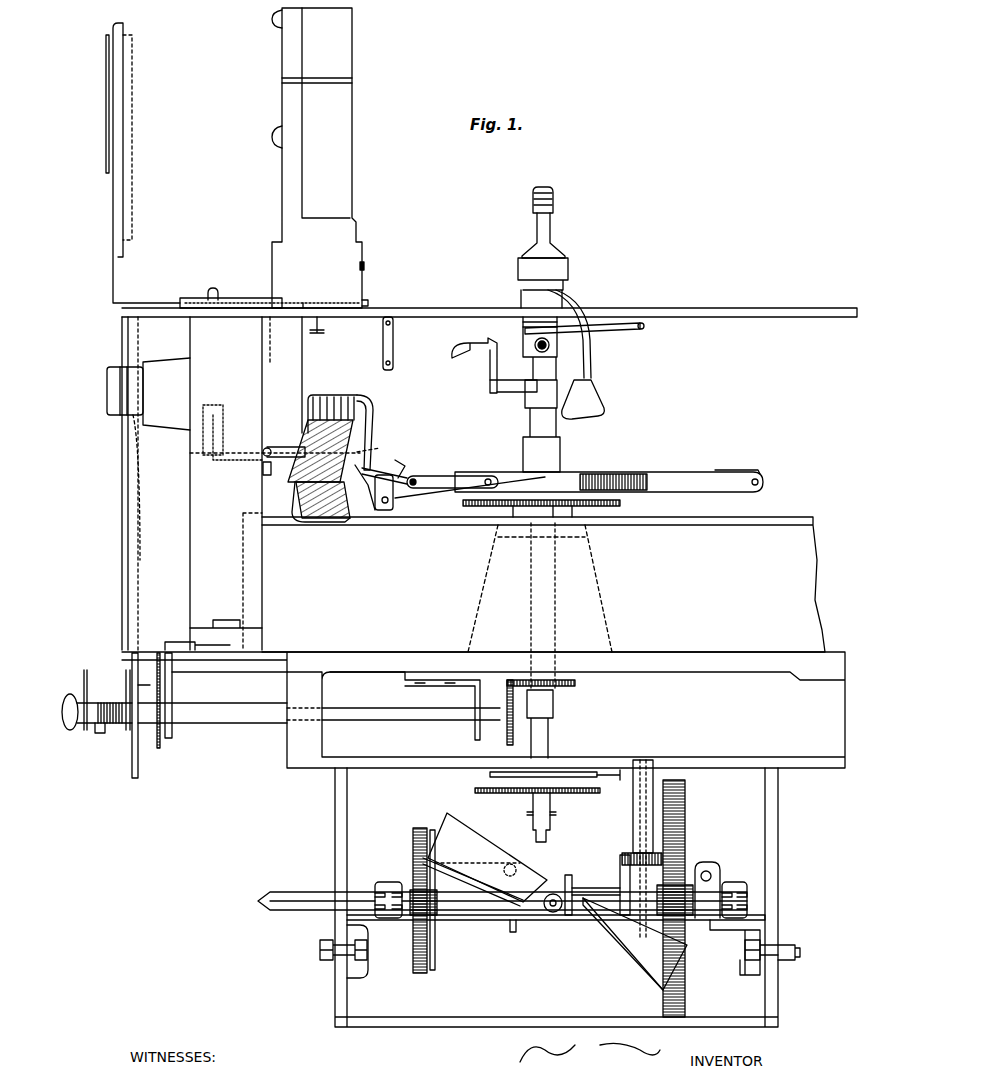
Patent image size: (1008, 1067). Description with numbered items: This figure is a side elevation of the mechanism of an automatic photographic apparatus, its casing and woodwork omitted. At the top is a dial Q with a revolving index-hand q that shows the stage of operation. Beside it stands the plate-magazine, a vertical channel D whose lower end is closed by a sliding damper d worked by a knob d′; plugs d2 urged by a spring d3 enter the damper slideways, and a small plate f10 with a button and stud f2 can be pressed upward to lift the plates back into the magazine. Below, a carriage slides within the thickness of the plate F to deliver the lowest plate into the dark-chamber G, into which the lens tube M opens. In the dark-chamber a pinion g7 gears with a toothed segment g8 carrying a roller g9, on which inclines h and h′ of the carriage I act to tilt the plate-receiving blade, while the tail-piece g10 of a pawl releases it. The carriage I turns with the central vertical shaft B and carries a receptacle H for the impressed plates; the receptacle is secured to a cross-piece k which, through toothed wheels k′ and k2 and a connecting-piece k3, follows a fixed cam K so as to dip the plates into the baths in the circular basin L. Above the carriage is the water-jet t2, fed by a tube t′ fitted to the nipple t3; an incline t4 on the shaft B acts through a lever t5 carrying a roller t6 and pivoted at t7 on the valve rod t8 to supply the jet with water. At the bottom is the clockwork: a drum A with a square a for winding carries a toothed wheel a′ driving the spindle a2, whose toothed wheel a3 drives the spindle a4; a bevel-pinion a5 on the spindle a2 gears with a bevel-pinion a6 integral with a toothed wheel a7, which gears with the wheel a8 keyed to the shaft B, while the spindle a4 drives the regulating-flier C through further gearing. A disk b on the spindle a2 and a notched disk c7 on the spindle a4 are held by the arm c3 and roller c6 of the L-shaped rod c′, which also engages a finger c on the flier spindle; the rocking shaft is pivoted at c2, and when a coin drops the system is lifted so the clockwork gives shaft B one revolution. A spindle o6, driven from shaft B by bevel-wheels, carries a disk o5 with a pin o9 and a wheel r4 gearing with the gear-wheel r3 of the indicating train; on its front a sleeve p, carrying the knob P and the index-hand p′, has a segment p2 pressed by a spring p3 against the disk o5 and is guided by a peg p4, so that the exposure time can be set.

The dial Q is at (113, 218).
The index-hand q is at (106, 131).
The vertical channel or shaft D is at (317, 158).
The sliding damper or shutter d is at (270, 297).
The button or knob d′ is at (221, 291).
The plugs d2 is at (374, 297).
The spring d3 is at (364, 270).
The small plate f10 is at (304, 306).
The button and stud f2 is at (351, 343).
The plate F is at (489, 470).
The hand wheel t3 is at (553, 197).
The central vertical shaft B is at (541, 579).
The lever t4 is at (494, 357).
The collar t8 is at (535, 324).
The pivot t5 is at (535, 348).
The link bar t6 is at (582, 330).
The pivot pin t7 is at (648, 326).
The finger-piece or key t′ is at (571, 334).
The funnel t2 is at (583, 399).
The tube M is at (148, 459).
The dark-chamber or camera proper G is at (233, 483).
The pinion g7 is at (197, 430).
The toothed segment g8 is at (275, 437).
The roller or cylinder g9 is at (283, 469).
The tail-piece of the pawl g10 is at (379, 446).
The receptacle H is at (330, 458).
The incline h is at (396, 468).
The toothed wheel k2 is at (404, 463).
The connecting-piece k3 is at (452, 482).
The toothed wheel k′ is at (386, 512).
The cross-piece k is at (366, 512).
The carriage I is at (579, 489).
The incline h′ is at (737, 463).
The fixed cam K is at (547, 510).
The circular basin L is at (543, 584).
The roller or drum A is at (483, 839).
The gear-wheel r3 is at (142, 714).
The wheel r4 is at (222, 704).
The pin o9 is at (147, 687).
The disk o5 is at (150, 757).
The spindle o6 is at (230, 711).
The button or knob P is at (70, 712).
The sleeve p is at (90, 726).
The index-hand p′ is at (84, 672).
The segment p2 is at (126, 676).
The peg p4 is at (106, 702).
The spring p3 is at (109, 734).
The toothed wheel a8 is at (537, 792).
The toothed wheel a7 is at (609, 790).
The toothed wheel a′ is at (667, 888).
The bevel-pinion a6 is at (638, 849).
The bevel-pinion a5 is at (644, 883).
The square a is at (318, 895).
The toothed wheel a3 is at (441, 900).
The spindle a2 is at (435, 897).
The spindle a4 is at (473, 887).
The regulating-flier C is at (557, 901).
The arm c3 is at (515, 857).
The finger c is at (555, 893).
The rod c′ is at (569, 876).
The roller c6 is at (620, 860).
The disk c7 is at (596, 888).
The pivot c2 is at (715, 888).
The disk b is at (516, 930).